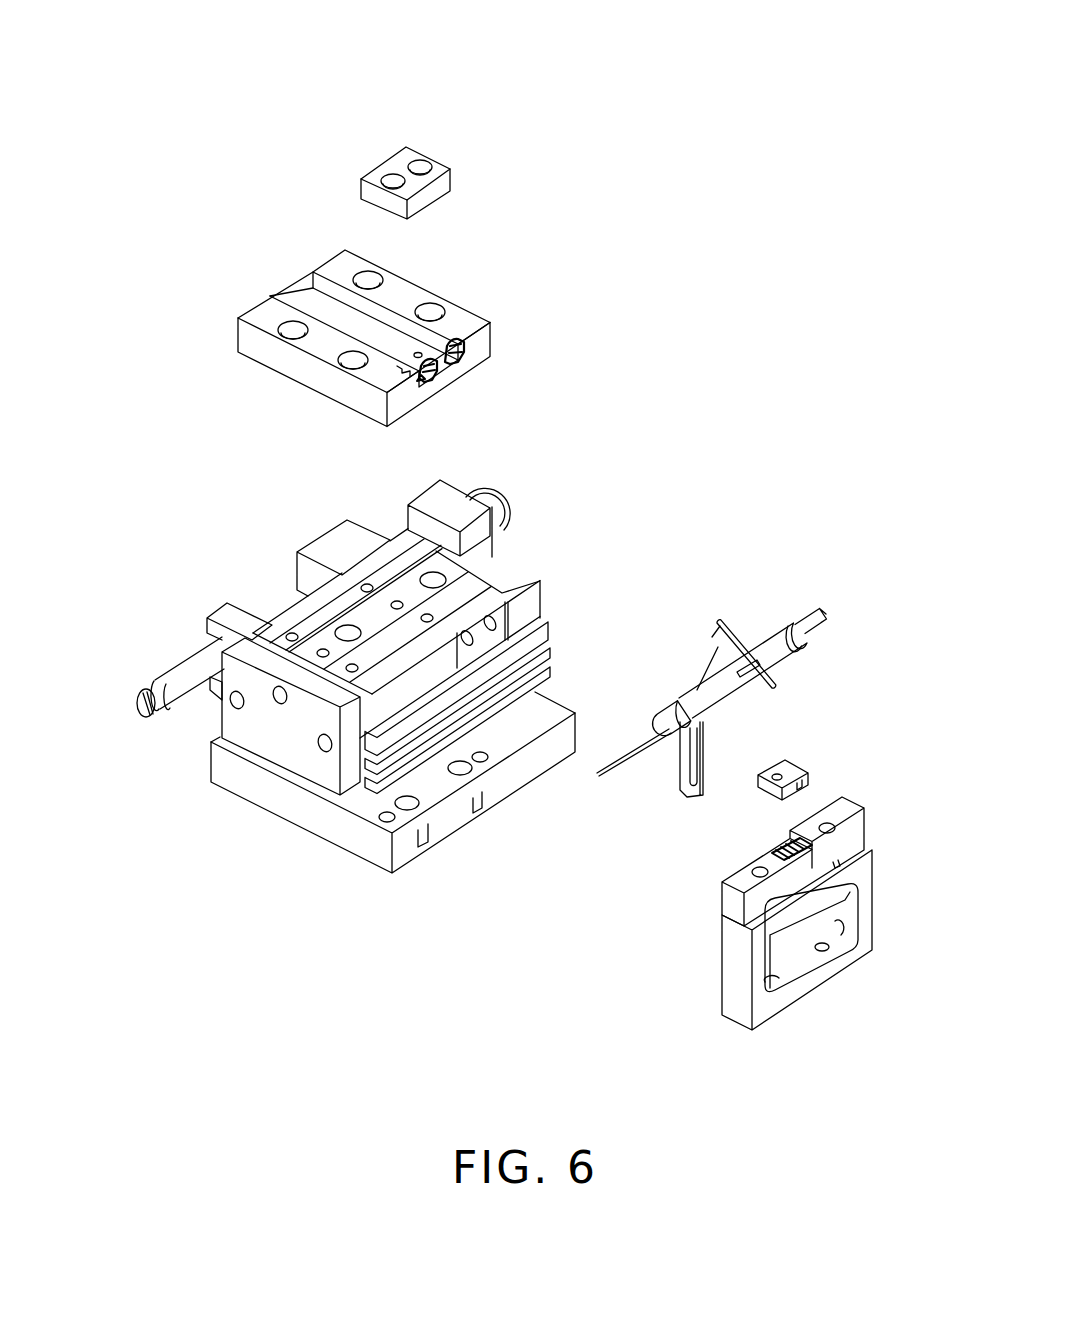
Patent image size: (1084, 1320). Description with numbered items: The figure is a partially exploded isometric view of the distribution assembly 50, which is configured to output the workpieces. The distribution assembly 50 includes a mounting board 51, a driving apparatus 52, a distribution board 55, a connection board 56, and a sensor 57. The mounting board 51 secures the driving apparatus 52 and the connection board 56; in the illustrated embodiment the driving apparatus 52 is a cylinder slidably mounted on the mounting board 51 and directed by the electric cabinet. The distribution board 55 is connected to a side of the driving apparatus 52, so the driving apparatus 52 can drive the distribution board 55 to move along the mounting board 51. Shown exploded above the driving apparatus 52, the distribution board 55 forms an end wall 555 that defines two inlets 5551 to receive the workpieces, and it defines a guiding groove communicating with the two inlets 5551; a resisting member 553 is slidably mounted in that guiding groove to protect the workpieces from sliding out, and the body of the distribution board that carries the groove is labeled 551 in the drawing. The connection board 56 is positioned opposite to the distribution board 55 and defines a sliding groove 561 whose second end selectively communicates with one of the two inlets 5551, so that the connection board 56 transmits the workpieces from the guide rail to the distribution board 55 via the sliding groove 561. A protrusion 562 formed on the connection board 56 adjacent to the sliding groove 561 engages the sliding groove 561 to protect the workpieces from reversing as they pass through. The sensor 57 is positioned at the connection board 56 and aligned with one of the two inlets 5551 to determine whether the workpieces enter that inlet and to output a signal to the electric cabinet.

The distribution assembly 50 is at (512, 45).
The mounting board 51 is at (510, 733).
The driving apparatus 52 is at (505, 590).
The distribution board 55 is at (463, 155).
The supporting block 551 is at (325, 315).
The resisting member 553 is at (395, 167).
The end wall 555 is at (438, 367).
The inlets 5551 is at (422, 378).
The connection board 56 is at (807, 743).
The sliding groove 561 is at (783, 844).
The protrusion 562 is at (787, 760).
The sensor 57 is at (712, 693).